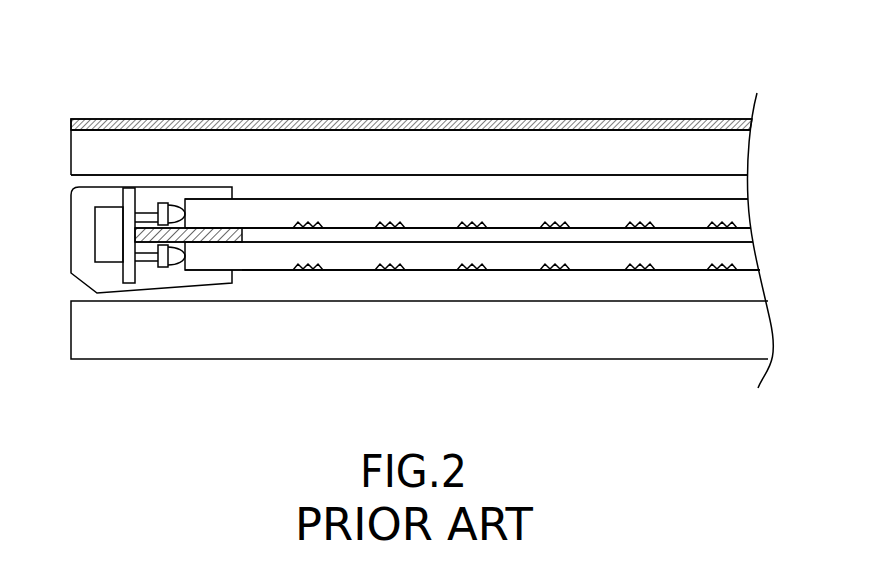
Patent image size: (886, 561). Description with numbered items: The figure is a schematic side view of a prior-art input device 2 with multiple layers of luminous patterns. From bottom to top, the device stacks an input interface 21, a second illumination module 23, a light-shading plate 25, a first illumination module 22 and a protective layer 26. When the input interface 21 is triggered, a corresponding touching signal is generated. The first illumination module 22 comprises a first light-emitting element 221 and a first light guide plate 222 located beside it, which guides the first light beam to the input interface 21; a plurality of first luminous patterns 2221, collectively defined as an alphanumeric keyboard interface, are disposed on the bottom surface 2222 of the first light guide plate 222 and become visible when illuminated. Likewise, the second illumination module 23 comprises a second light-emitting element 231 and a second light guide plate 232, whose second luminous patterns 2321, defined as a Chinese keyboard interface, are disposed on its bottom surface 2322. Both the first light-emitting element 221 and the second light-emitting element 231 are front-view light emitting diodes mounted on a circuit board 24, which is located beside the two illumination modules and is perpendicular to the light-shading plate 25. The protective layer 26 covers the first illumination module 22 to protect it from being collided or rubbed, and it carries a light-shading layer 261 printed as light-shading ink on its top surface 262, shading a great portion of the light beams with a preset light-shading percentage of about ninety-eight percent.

The input device 2 is at (619, 37).
The input interface 21 is at (165, 348).
The first illumination module 22 is at (725, 205).
The first light-emitting element 221 is at (173, 203).
The first light guide plate 222 is at (498, 213).
The first luminous patterns 2221 is at (385, 223).
The bottom surface 2222 is at (343, 227).
The second illumination module 23 is at (737, 250).
The second light-emitting element 231 is at (160, 247).
The second light guide plate 232 is at (590, 260).
The second luminous patterns 2321 is at (477, 270).
The bottom surface 2322 is at (520, 270).
The circuit board 24 is at (128, 227).
The light-shading plate 25 is at (193, 228).
The protective layer 26 is at (657, 136).
The light-shading layer 261 is at (495, 118).
The top surface 262 is at (462, 118).